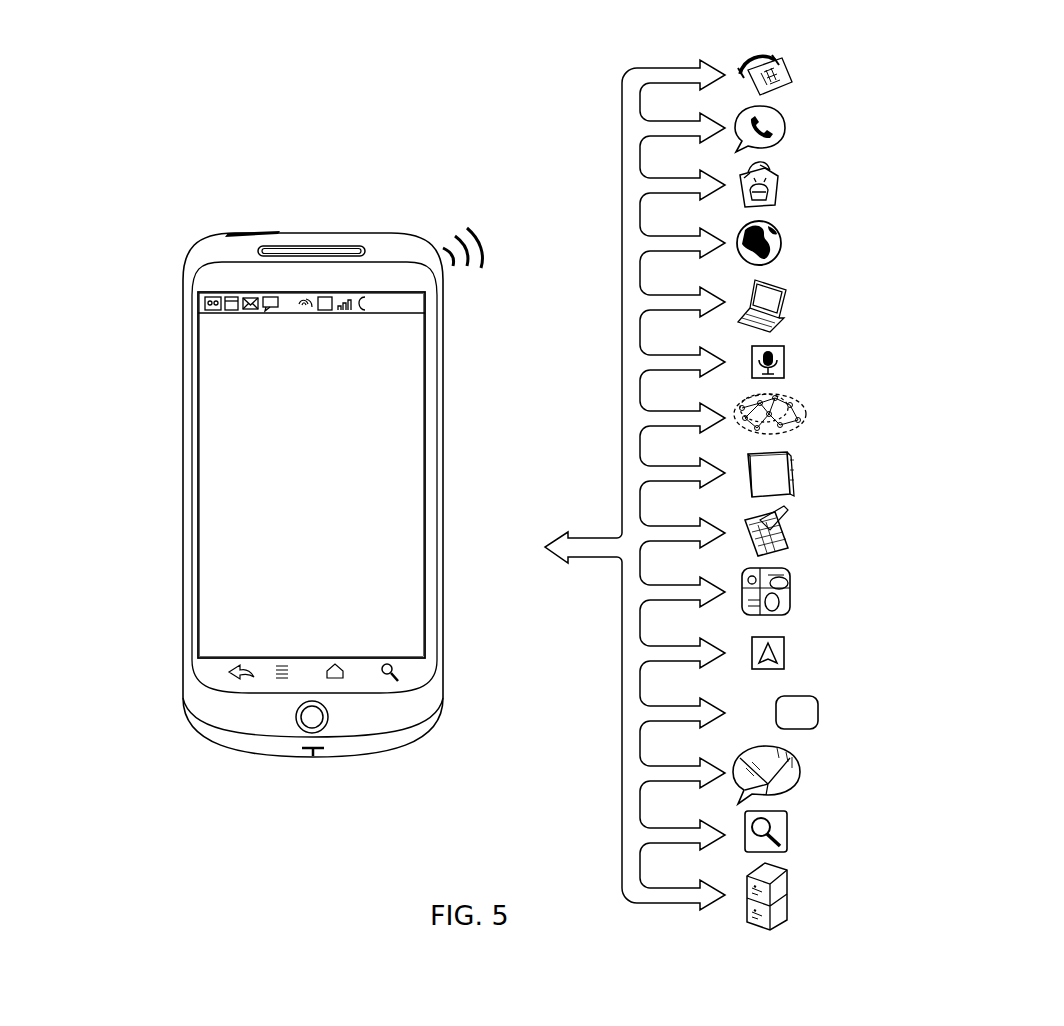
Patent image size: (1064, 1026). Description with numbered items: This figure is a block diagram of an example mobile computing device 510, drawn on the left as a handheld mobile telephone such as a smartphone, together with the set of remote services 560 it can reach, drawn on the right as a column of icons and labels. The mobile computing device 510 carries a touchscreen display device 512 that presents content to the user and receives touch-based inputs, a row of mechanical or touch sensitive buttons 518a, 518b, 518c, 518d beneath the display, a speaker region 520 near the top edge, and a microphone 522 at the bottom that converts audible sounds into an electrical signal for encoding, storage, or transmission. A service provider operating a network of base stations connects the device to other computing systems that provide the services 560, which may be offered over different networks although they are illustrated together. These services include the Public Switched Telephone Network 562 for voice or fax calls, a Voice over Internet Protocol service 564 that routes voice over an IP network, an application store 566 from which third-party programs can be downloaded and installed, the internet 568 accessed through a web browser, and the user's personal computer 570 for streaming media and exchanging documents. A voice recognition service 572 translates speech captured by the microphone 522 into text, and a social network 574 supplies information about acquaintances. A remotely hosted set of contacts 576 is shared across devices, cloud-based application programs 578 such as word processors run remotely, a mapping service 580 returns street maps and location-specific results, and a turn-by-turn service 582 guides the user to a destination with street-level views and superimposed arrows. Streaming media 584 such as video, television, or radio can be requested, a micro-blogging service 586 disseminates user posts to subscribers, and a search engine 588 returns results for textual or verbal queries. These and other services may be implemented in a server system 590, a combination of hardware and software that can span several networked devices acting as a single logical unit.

The mobile computing device 510 is at (372, 174).
The touchscreen display device 512 is at (428, 484).
The button 518a is at (238, 666).
The button 518b is at (282, 662).
The button 518c is at (334, 660).
The button 518d is at (392, 663).
The speaker 520 is at (318, 245).
The microphone 522 is at (313, 758).
The services 560 is at (1063, 42).
The Public Switched Telephone Network (PSTN) 562 is at (786, 80).
The Voice over Internet Protocol (VoIP) service 564 is at (784, 128).
The application store 566 is at (778, 183).
The internet 568 is at (782, 243).
The personal computer 570 is at (790, 300).
The voice recognition service 572 is at (783, 357).
The social network 574 is at (805, 404).
The contacts 576 is at (790, 473).
The cloud-based application programs 578 is at (790, 532).
The mapping service 580 is at (790, 580).
The turn-by-turn service 582 is at (784, 647).
The streaming media 584 is at (818, 708).
The micro-blogging service 586 is at (802, 770).
The search engine 588 is at (788, 830).
The server system 590 is at (785, 890).